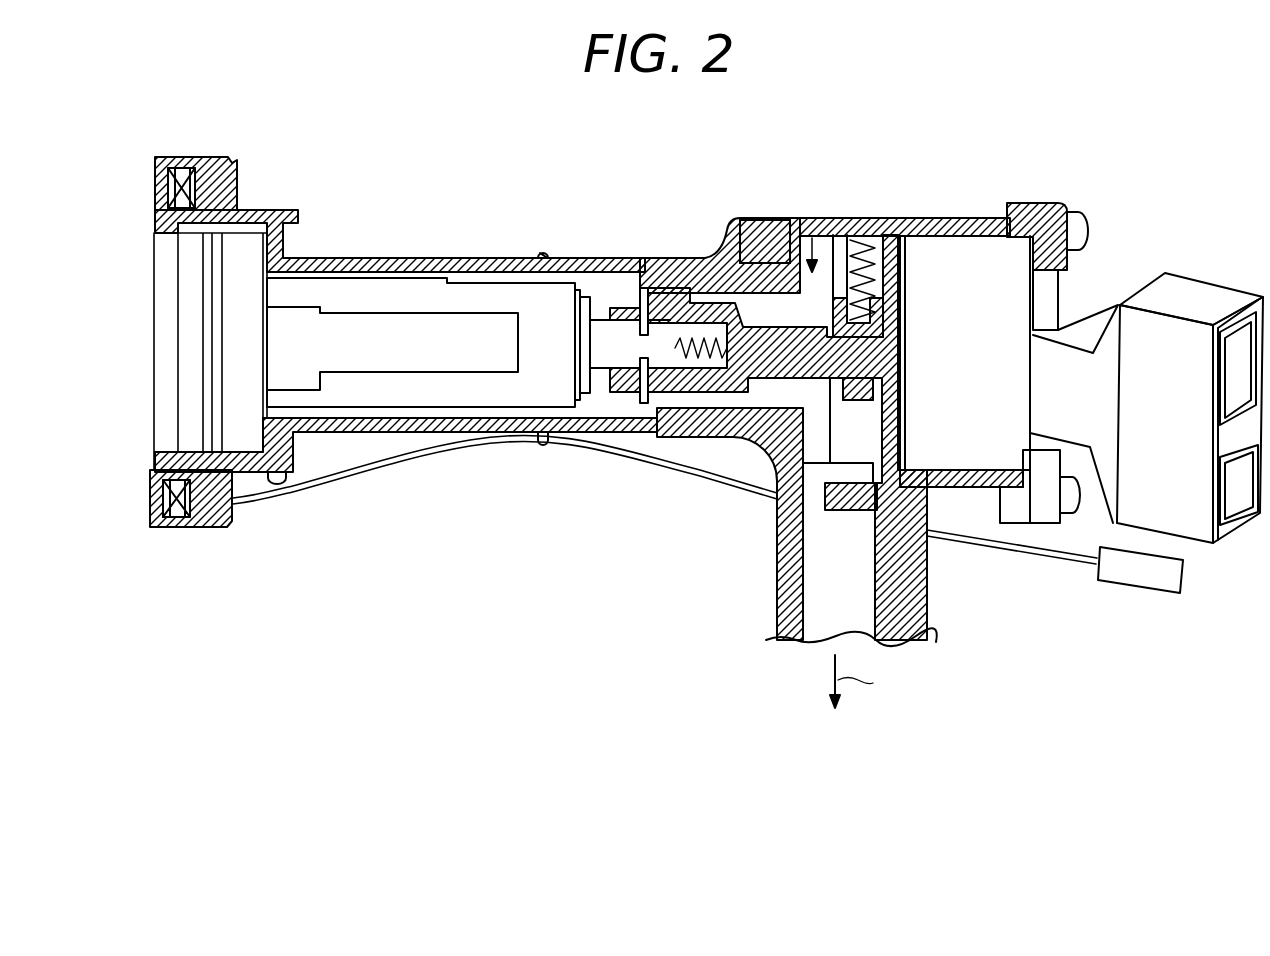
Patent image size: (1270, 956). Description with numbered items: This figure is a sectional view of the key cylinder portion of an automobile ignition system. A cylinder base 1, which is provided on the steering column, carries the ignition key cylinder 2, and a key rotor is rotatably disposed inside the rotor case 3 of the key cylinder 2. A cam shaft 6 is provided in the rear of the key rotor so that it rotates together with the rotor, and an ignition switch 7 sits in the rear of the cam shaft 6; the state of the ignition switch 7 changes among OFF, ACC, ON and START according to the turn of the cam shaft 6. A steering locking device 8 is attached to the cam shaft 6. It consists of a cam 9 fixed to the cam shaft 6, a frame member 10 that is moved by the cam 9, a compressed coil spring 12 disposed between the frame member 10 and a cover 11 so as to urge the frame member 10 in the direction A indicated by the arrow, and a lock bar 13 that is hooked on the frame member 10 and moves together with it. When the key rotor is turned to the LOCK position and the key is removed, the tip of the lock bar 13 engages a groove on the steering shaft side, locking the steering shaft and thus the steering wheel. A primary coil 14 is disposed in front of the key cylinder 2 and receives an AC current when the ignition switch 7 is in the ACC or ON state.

The cylinder base 1 is at (527, 256).
The ignition key cylinder 2 is at (370, 270).
The rotor case 3 is at (401, 396).
The cam shaft 6 is at (760, 378).
The ignition switch 7 is at (958, 240).
The steering locking device 8 is at (807, 234).
The cam 9 is at (853, 400).
The frame member 10 is at (906, 308).
The cover 11 is at (747, 220).
The compressed coil spring 12 is at (853, 232).
The lock bar 13 is at (820, 590).
The primary coil 14 is at (181, 170).